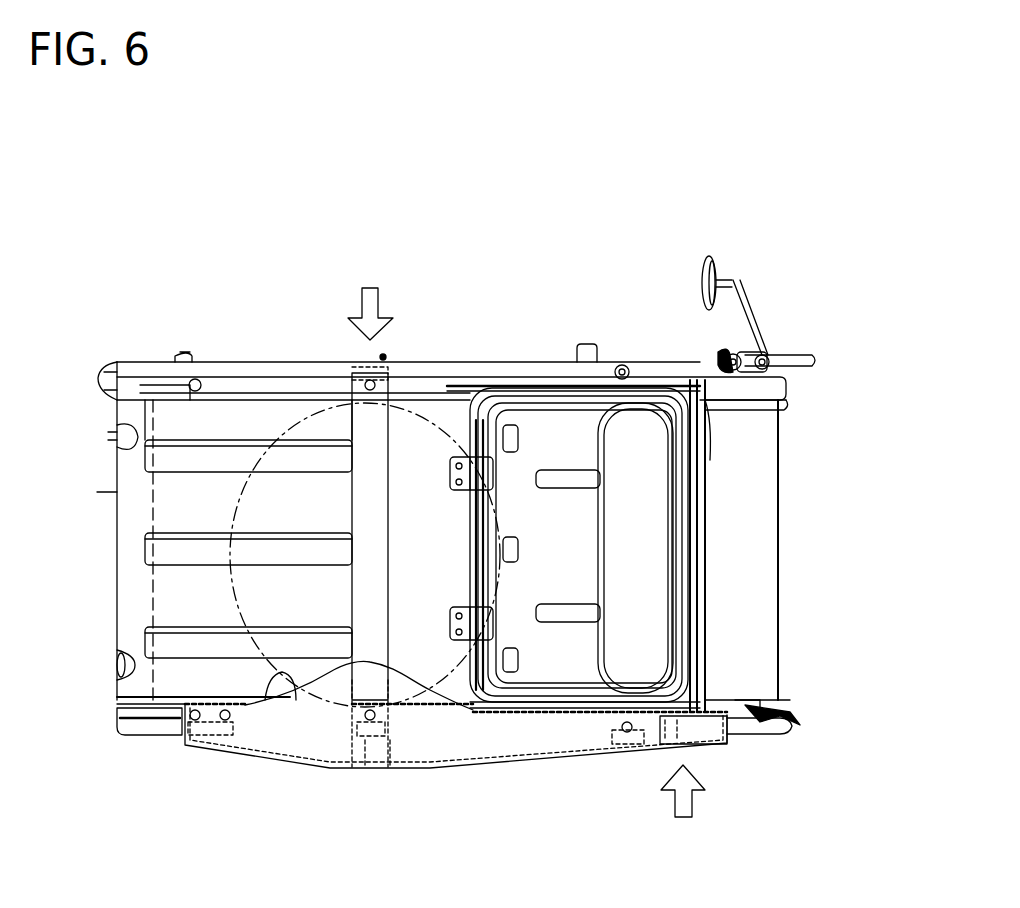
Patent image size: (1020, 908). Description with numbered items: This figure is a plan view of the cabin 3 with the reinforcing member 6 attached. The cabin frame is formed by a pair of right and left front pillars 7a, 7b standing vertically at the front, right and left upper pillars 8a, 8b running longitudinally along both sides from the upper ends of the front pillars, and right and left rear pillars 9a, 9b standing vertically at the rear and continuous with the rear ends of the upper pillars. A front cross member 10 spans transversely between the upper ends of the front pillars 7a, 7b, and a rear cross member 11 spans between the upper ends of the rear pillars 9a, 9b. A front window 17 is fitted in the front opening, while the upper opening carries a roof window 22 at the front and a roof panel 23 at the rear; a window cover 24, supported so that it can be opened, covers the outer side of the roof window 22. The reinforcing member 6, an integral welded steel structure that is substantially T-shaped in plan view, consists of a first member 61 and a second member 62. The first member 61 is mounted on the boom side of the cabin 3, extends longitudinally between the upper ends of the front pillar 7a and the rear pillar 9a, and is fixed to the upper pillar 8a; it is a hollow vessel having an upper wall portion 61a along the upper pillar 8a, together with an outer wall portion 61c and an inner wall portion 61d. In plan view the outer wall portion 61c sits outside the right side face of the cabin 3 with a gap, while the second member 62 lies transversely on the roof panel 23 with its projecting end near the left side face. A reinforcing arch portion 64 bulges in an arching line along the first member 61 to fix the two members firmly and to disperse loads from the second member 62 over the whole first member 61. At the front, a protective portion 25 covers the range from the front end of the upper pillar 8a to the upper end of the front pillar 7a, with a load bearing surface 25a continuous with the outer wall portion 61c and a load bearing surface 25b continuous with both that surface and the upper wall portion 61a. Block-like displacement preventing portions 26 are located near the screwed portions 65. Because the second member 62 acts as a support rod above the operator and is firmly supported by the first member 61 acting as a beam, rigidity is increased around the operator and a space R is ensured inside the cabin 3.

The cabin 3 is at (448, 220).
The reinforcing member 6 is at (456, 770).
The front pillar 7a is at (755, 738).
The front pillar 7b is at (782, 380).
The upper pillar 8a is at (155, 740).
The upper pillar 8b is at (226, 362).
The rear pillar 9a is at (116, 708).
The rear pillar 9b is at (103, 384).
The front cross member 10 is at (702, 487).
The rear cross member 11 is at (122, 527).
The front window 17 is at (766, 573).
The roof window 22 is at (604, 385).
The roof panel 23 is at (172, 420).
The window cover 24 is at (548, 428).
The protective portion 25 is at (715, 786).
The load bearing surface 25a is at (690, 746).
The load bearing surface 25b is at (710, 740).
The displacement preventing portion 26 is at (380, 370).
The first member 61 is at (340, 768).
The upper wall portion 61a is at (532, 740).
The outer wall portion 61c is at (430, 770).
The inner wall portion 61d is at (268, 680).
The second member 62 is at (365, 428).
The reinforcing arch portion 64 is at (315, 748).
The screwed portion 65 is at (377, 385).
The space R is at (282, 430).